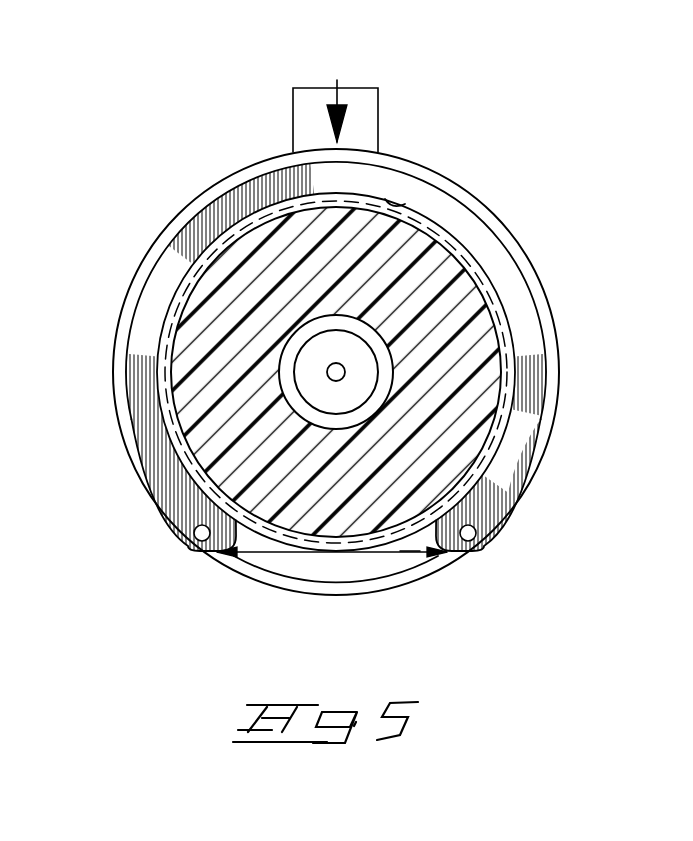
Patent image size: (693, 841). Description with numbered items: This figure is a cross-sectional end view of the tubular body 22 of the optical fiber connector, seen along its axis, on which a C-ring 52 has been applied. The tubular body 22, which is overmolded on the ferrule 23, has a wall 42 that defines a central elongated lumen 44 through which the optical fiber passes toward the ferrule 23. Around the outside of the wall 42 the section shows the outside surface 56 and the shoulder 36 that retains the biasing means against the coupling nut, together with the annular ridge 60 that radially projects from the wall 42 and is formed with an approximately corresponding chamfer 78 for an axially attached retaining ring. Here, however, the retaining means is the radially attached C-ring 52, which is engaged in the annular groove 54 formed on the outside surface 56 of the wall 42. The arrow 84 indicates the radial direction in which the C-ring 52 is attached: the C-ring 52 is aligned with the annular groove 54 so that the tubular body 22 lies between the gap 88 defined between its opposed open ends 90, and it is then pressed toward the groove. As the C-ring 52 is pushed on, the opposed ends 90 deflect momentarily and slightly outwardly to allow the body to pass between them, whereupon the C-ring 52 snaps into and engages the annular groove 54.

The tubular body 22 is at (500, 358).
The ferrule 23 is at (292, 395).
The shoulder 36 is at (235, 165).
The wall 42 is at (273, 298).
The central elongated lumen 44 is at (282, 369).
The C-ring 52 is at (125, 363).
The annular groove 54 is at (485, 297).
The outside surface 56 is at (442, 240).
The annular ridge 60 is at (293, 535).
The chamfer 78 is at (405, 205).
The arrow 84 is at (328, 112).
The gap 88 is at (410, 552).
The opposed open ends 90 is at (200, 550).